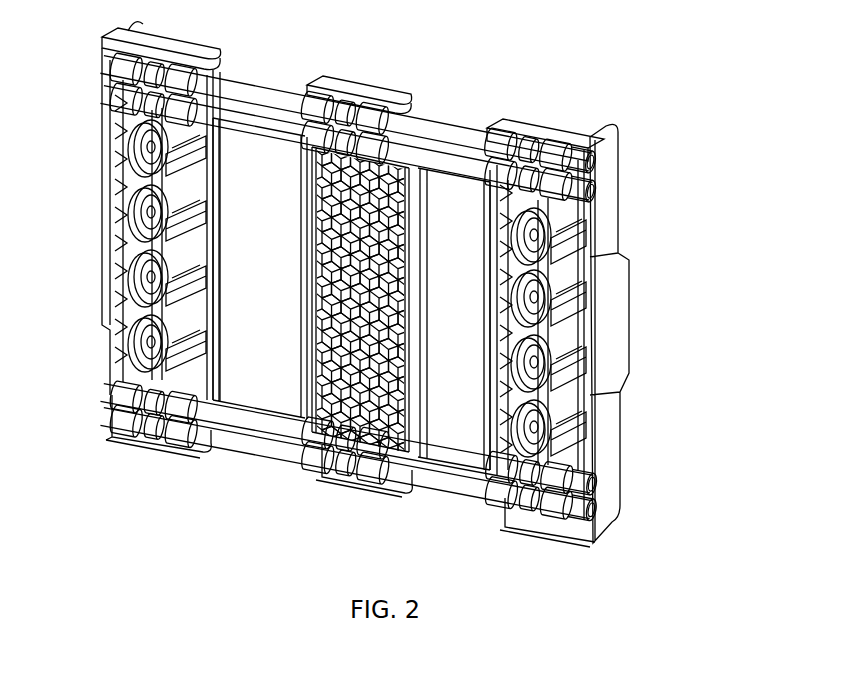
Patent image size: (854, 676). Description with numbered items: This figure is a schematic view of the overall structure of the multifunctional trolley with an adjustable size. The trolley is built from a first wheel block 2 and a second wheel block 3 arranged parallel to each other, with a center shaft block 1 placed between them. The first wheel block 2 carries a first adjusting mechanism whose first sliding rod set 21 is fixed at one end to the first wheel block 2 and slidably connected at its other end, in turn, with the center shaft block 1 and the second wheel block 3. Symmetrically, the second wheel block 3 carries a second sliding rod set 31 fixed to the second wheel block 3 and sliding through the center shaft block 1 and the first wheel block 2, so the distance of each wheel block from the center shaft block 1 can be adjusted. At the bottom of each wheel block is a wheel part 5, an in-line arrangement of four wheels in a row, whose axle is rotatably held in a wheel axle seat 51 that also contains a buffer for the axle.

The center shaft block 1 is at (320, 441).
The first wheel block 2 is at (156, 436).
The first sliding rod set 21 is at (236, 434).
The second wheel block 3 is at (609, 483).
The second sliding rod set 31 is at (229, 114).
The wheel part 5 is at (118, 305).
The wheel axle seat 51 is at (569, 435).